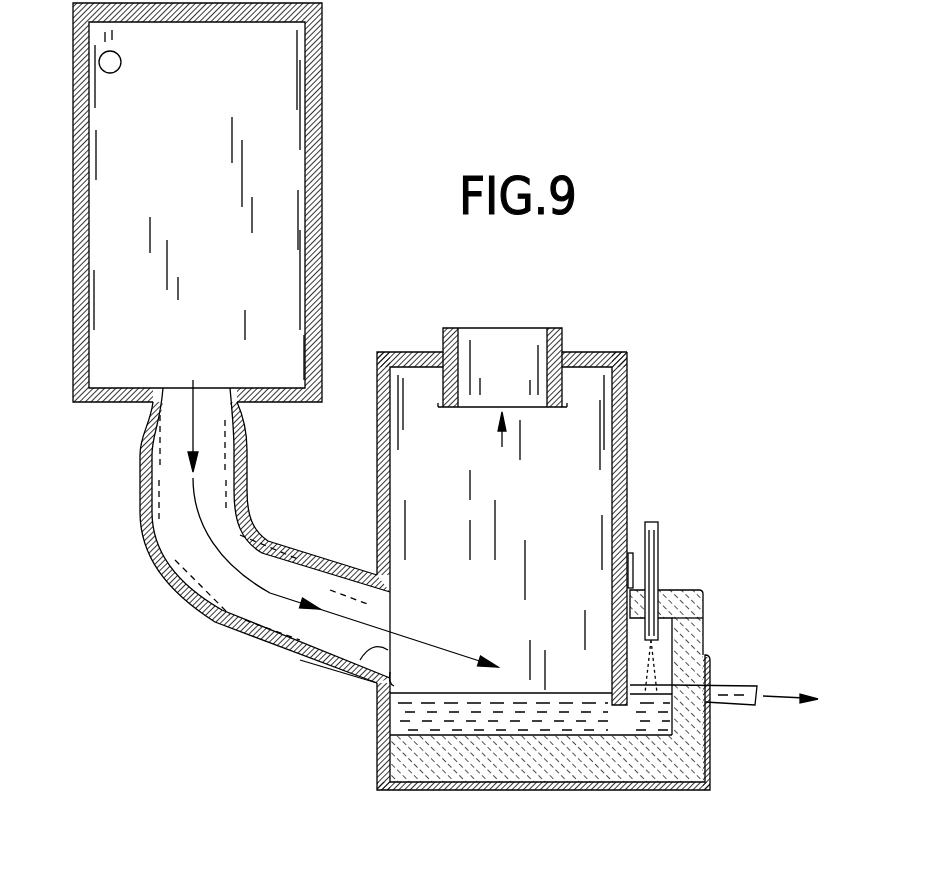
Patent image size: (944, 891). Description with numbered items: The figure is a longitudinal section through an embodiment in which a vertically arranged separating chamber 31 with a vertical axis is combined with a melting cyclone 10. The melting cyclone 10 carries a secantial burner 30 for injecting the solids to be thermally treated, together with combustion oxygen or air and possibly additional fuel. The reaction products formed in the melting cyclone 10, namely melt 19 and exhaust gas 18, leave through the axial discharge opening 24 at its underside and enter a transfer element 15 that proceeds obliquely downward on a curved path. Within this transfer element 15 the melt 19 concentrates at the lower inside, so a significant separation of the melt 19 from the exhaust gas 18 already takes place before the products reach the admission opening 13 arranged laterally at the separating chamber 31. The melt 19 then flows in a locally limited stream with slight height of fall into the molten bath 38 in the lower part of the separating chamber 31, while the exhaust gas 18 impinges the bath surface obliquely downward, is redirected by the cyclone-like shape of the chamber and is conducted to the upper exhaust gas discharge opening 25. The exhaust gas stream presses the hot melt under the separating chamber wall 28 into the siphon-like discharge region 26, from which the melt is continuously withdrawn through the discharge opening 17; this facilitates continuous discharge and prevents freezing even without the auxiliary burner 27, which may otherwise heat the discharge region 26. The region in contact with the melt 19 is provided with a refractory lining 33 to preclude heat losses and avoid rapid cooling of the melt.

The melting cyclone 10 is at (198, 194).
The admission opening 13 is at (342, 673).
The transfer element 15 is at (138, 495).
The discharge opening 17 is at (708, 670).
The exhaust gas 18 is at (502, 440).
The melt 19 is at (397, 680).
The axial discharge opening 24 is at (212, 388).
The exhaust gas discharge opening 25 is at (538, 410).
The discharge region 26 is at (657, 650).
The auxiliary burner 27 is at (650, 527).
The separating chamber wall 28 is at (610, 650).
The secantial burner 30 is at (121, 62).
The separating chamber 31 is at (526, 545).
The refractory lining 33 is at (687, 773).
The molten bath 38 is at (657, 722).